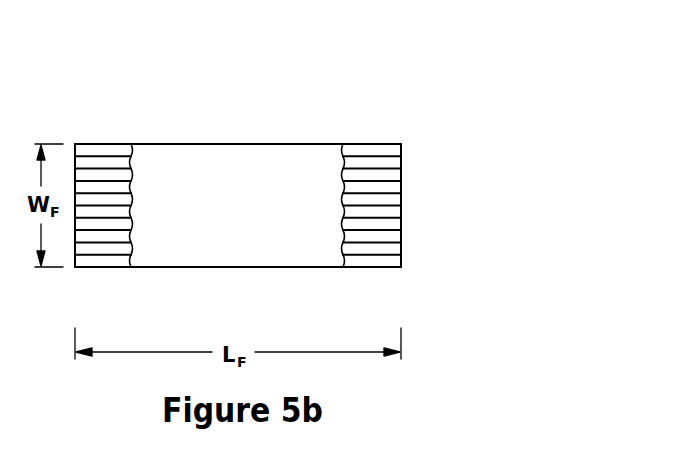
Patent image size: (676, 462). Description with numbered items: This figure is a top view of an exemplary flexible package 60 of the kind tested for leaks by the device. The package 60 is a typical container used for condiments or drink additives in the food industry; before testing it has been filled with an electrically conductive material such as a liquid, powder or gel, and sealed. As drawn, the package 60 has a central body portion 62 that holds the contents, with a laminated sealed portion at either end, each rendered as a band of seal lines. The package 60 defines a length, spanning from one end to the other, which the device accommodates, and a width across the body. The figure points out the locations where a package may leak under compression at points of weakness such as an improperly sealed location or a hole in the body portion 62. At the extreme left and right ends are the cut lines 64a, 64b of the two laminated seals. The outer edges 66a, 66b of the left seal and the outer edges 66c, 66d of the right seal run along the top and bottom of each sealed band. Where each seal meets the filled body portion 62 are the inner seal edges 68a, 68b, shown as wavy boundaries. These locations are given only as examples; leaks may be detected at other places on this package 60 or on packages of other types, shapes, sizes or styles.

The flexible package 60 is at (76, 100).
The body portion 62 is at (258, 268).
The cut line 64a is at (75, 214).
The cut line 64b is at (401, 213).
The outer edge of the seal 66a is at (109, 144).
The outer edge of the seal 66b is at (100, 268).
The outer edge of the seal 66c is at (368, 144).
The outer edge of the seal 66d is at (370, 268).
The inner seal edge 68a is at (132, 212).
The inner seal edge 68b is at (343, 196).